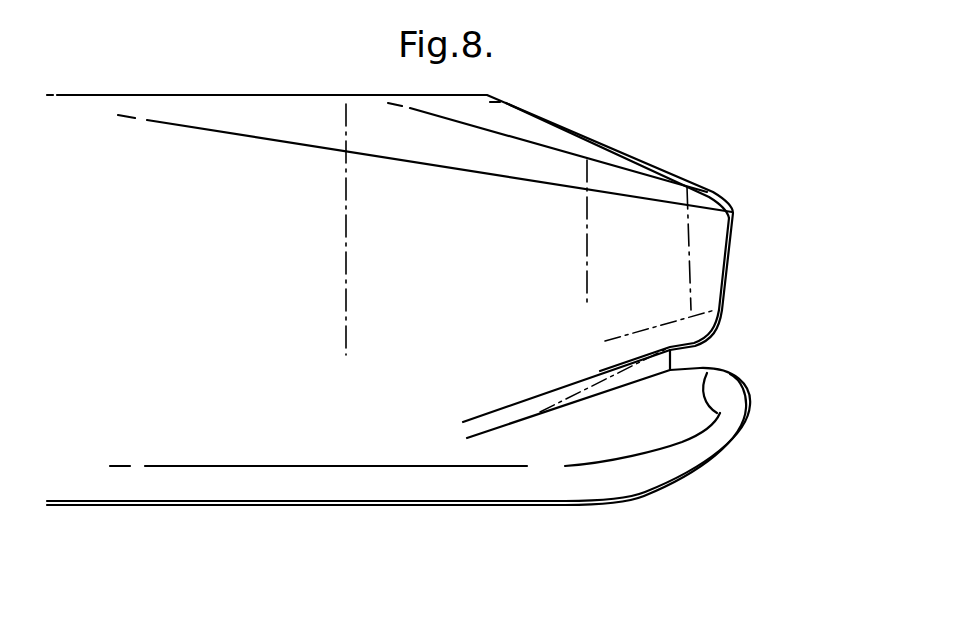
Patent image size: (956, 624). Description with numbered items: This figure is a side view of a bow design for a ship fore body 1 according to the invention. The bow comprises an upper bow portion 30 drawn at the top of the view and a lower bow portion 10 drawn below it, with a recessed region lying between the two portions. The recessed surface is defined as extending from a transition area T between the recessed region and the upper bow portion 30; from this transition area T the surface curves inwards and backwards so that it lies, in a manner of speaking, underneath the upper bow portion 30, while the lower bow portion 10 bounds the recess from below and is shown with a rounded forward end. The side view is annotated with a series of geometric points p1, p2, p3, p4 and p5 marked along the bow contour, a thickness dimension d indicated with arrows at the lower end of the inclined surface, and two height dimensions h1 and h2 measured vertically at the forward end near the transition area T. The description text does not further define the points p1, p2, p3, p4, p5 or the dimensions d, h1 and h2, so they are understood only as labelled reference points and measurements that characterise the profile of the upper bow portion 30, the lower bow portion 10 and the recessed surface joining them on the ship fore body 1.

The ship fore body 1 is at (467, 260).
The upper bow portion 30 is at (703, 258).
The lower bow portion 10 is at (692, 418).
The point p1 is at (535, 415).
The point p2 is at (670, 349).
The point p3 is at (600, 373).
The point p4 is at (728, 325).
The point p5 is at (717, 413).
The transition area T is at (737, 322).
The thickness d is at (470, 439).
The height h1 is at (672, 350).
The height h2 is at (725, 328).